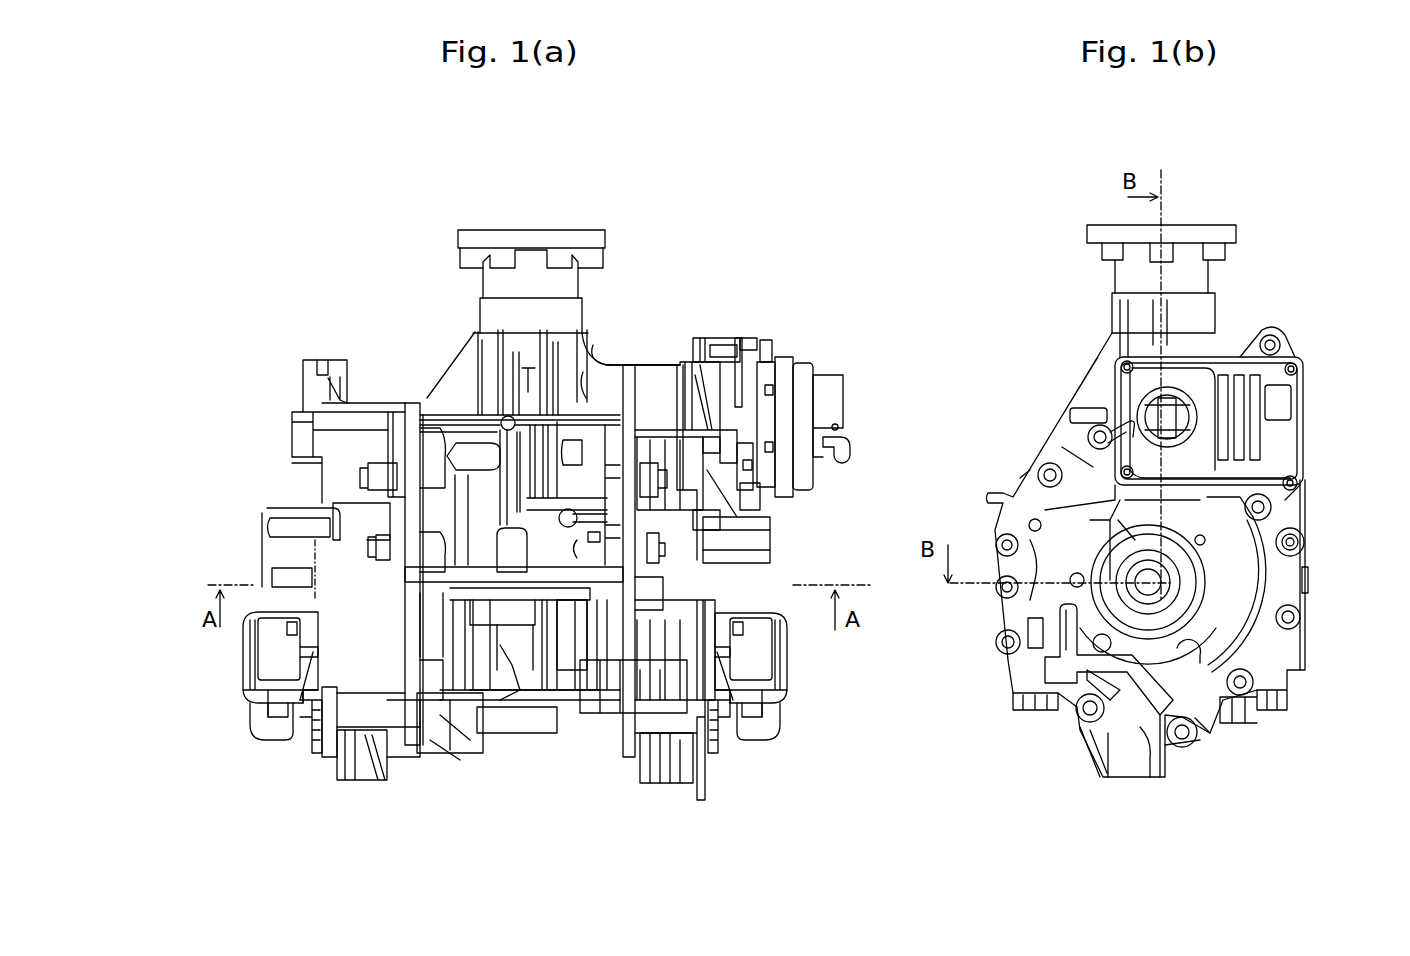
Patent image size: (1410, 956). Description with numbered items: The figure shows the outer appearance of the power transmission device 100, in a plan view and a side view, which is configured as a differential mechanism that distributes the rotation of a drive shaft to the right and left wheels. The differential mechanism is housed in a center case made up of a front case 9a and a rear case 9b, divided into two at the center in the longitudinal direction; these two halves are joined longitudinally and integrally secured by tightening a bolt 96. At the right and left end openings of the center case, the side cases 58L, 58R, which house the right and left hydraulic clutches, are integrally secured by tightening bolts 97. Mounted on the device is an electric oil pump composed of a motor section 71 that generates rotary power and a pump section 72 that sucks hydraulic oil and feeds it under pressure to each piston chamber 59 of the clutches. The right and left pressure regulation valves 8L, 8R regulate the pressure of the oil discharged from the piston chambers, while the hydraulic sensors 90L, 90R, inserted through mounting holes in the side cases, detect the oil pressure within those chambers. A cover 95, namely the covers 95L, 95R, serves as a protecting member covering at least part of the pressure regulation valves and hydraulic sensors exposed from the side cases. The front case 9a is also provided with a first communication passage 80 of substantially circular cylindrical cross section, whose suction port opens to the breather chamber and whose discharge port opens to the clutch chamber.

In FIG. 1A, the power transmission device 100 is at (703, 209).
In FIG. 1B, the power transmission device 100 is at (1306, 218).
In FIG. 1A, the left side case 58L is at (393, 402).
In FIG. 1A, the right side case 58R is at (665, 366).
In FIG. 1A, the front case 9a is at (594, 352).
In FIG. 1B, the front case 9a is at (1272, 355).
In FIG. 1A, the rear case 9b is at (548, 722).
In FIG. 1A, the pump section 72 is at (746, 339).
In FIG. 1A, the motor section 71 is at (852, 398).
In FIG. 1B, the motor section 71 is at (1314, 427).
In FIG. 1A, the bolts 97 is at (368, 546).
In FIG. 1A, the left pressure regulation valve 8L is at (260, 662).
In FIG. 1A, the right pressure regulation valve 8R is at (770, 657).
In FIG. 1B, the right pressure regulation valve 8R is at (1043, 619).
In FIG. 1A, the left cover 95L is at (243, 676).
In FIG. 1A, the right cover 95R is at (788, 672).
In FIG. 1A, the left hydraulic sensor 90L is at (275, 718).
In FIG. 1A, the right hydraulic sensor 90R is at (762, 720).
In FIG. 1B, the right hydraulic sensor 90R is at (1173, 740).
In FIG. 1A, the bolt 96 is at (517, 683).
In FIG. 1B, the first communication passage 80 is at (1060, 466).
In FIG. 1B, the piston chamber 59 is at (1233, 617).
In FIG. 1B, the cover 95 is at (1152, 731).